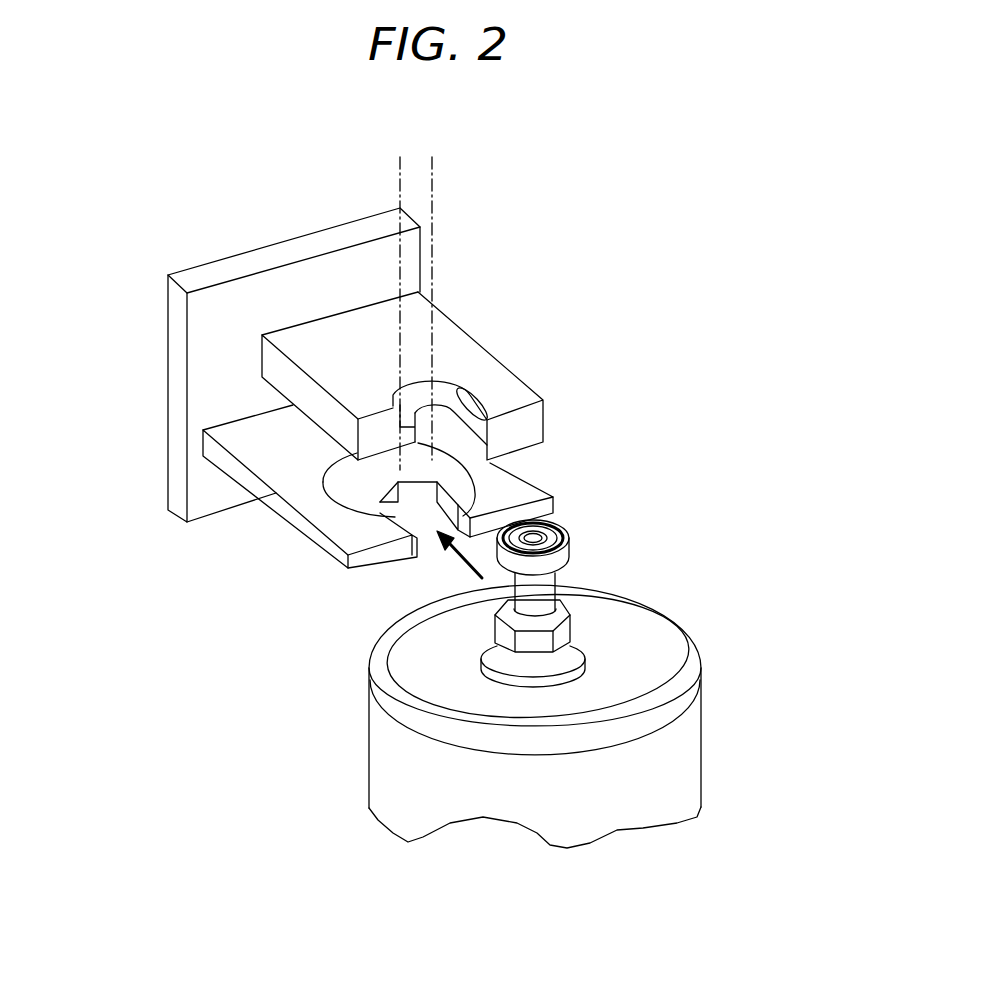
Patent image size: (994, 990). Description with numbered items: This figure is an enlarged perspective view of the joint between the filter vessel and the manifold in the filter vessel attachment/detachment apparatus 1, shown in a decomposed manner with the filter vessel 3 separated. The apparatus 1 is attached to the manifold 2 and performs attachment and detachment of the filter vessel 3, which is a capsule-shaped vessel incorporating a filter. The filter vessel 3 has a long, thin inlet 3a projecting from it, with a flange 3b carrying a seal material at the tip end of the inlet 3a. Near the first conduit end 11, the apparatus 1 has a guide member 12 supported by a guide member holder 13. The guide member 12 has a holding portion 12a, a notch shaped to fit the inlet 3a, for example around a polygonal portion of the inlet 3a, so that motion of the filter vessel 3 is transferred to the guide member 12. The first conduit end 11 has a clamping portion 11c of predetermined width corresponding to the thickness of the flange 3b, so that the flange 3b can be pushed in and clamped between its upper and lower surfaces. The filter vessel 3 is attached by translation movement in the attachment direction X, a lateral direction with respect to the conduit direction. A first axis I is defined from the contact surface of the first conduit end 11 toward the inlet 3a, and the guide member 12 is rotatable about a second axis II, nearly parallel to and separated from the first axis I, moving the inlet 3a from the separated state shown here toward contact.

The filter vessel attachment/detachment apparatus 1 is at (615, 283).
The manifold 2 is at (294, 361).
The filter vessel 3 is at (575, 701).
The inlet 3a is at (577, 595).
The flange 3b is at (579, 507).
The first conduit end 11 is at (423, 335).
The clamping portion 11c is at (500, 377).
The guide member 12 is at (240, 464).
The holding portion 12a is at (324, 553).
The guide member holder 13 is at (524, 440).
The first axis I is at (484, 195).
The second axis II is at (357, 195).
The attachment direction X is at (463, 553).